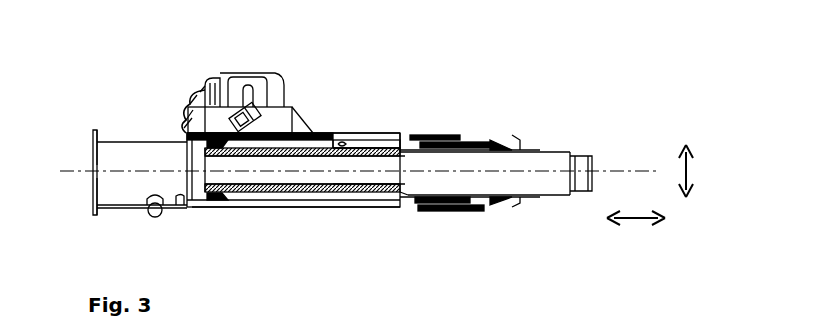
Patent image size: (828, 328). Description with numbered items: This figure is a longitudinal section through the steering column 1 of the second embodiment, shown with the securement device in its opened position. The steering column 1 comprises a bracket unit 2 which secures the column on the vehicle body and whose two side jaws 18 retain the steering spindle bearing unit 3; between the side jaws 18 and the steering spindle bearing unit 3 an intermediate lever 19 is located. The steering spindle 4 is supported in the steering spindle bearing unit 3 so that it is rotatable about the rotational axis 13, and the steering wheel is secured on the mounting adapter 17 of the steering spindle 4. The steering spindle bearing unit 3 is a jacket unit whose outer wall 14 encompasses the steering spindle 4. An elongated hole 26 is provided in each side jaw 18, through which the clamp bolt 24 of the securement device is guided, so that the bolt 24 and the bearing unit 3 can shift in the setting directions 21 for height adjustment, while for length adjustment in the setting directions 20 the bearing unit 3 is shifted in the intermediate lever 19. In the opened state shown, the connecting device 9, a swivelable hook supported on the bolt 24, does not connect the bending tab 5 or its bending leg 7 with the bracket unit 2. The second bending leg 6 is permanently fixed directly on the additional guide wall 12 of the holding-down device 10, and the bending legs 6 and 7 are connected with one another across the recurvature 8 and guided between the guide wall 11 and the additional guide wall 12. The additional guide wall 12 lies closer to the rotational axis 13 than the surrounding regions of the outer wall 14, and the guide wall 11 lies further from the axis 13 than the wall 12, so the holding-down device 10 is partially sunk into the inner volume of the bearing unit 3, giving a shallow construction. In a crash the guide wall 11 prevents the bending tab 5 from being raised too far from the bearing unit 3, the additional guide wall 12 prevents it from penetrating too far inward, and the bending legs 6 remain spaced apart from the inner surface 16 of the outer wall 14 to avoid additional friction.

The steering column 1 is at (407, 65).
The bracket unit 2 is at (275, 76).
The steering spindle bearing unit 3 is at (475, 142).
The steering spindle 4 is at (528, 150).
The bending tab 5 is at (333, 140).
The second bending leg 6 is at (330, 195).
The bending leg 7 is at (280, 130).
The recurvature 8 is at (356, 146).
The connecting device 9 is at (262, 78).
The holding-down device 10 is at (398, 140).
The guide wall 11 is at (296, 133).
The additional guide wall 12 is at (366, 186).
The rotational axis 13 is at (618, 171).
The outer wall 14 is at (505, 140).
The inner surface 16 is at (266, 208).
The mounting adapter 17 is at (582, 155).
The side jaws 18 is at (210, 86).
The intermediate lever 19 is at (136, 145).
The setting directions 20 is at (636, 224).
The setting directions 21 is at (690, 150).
The bolt 24 is at (205, 206).
The elongated hole 26 is at (240, 106).